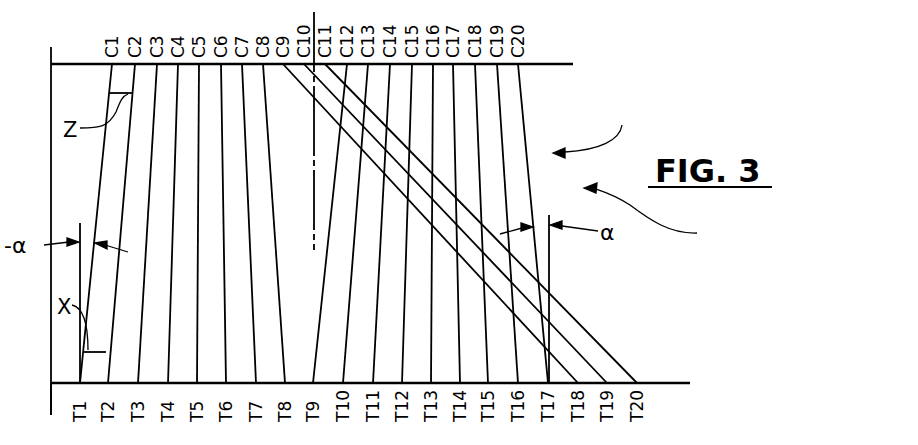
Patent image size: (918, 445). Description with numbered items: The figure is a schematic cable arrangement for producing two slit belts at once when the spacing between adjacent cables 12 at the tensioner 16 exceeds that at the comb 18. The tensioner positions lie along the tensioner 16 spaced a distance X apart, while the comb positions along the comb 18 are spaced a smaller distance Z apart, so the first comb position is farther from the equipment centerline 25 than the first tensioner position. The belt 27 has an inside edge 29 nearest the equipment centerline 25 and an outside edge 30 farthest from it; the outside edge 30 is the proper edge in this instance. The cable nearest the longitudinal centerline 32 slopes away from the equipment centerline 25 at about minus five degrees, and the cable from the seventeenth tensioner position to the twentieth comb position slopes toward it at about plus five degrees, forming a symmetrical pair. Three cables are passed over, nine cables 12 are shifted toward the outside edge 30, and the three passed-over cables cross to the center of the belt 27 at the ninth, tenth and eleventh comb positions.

The cables 12 is at (476, 125).
The tensioner 16 is at (673, 383).
The comb 18 is at (558, 64).
The equipment centerline 25 is at (51, 363).
The belt 27 is at (595, 130).
The inside edge 29 is at (36, 131).
The outside edge 30 is at (654, 215).
The longitudinal centerline 32 is at (314, 156).